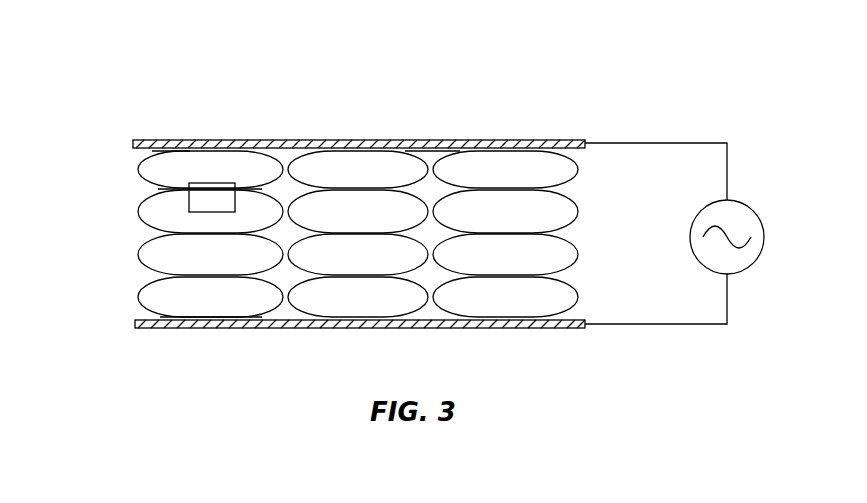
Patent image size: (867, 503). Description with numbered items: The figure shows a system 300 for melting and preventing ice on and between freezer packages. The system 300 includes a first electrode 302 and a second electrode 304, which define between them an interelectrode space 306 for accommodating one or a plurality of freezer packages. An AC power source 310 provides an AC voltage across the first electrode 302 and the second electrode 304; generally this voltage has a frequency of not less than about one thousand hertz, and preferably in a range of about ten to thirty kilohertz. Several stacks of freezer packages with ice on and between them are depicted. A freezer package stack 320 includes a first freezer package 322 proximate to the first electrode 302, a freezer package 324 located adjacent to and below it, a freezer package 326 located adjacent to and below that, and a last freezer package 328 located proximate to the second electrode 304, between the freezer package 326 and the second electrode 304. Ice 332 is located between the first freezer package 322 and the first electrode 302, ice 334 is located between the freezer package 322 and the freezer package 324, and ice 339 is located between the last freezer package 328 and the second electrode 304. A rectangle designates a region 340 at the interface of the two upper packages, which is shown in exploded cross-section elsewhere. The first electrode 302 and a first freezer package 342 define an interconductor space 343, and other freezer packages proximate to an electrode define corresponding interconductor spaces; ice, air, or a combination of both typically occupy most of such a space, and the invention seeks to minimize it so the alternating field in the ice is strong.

The system 300 is at (205, 78).
The first electrode 302 is at (530, 140).
The second electrode 304 is at (311, 329).
The interelectrode space 306 is at (631, 221).
The AC power source 310 is at (754, 262).
The freezer package stack 320 is at (114, 178).
The first freezer package 322 is at (261, 178).
The freezer package 324 is at (276, 220).
The freezer package 326 is at (235, 266).
The last freezer package 328 is at (235, 306).
The ice 332 is at (152, 151).
The ice 334 is at (189, 193).
The ice 339 is at (137, 314).
The region 340 is at (167, 189).
The first freezer package 342 is at (380, 178).
The interconductor space 343 is at (426, 149).